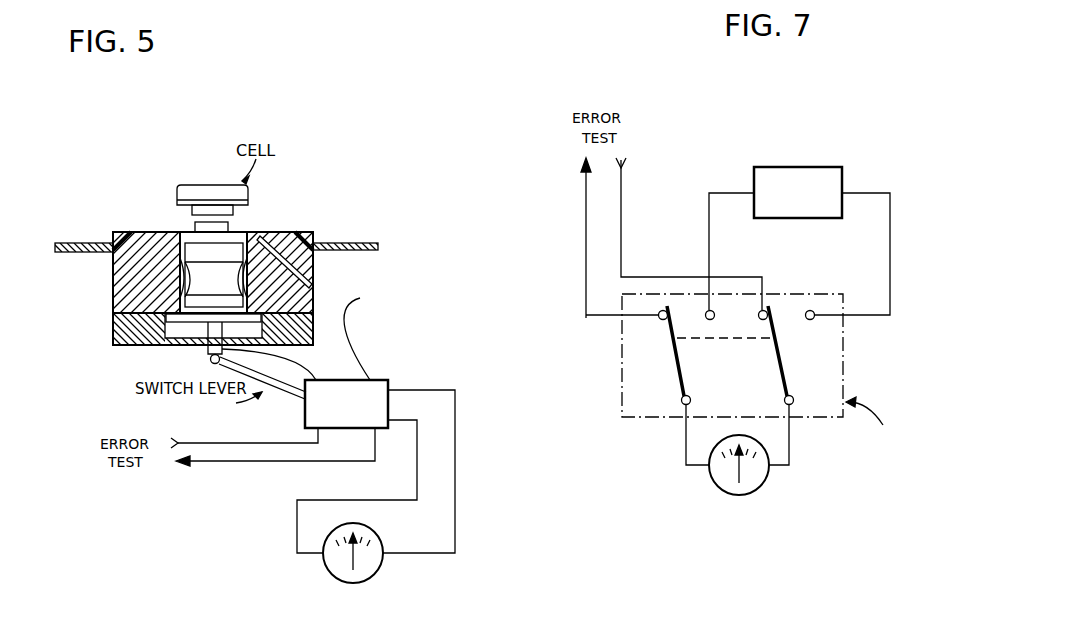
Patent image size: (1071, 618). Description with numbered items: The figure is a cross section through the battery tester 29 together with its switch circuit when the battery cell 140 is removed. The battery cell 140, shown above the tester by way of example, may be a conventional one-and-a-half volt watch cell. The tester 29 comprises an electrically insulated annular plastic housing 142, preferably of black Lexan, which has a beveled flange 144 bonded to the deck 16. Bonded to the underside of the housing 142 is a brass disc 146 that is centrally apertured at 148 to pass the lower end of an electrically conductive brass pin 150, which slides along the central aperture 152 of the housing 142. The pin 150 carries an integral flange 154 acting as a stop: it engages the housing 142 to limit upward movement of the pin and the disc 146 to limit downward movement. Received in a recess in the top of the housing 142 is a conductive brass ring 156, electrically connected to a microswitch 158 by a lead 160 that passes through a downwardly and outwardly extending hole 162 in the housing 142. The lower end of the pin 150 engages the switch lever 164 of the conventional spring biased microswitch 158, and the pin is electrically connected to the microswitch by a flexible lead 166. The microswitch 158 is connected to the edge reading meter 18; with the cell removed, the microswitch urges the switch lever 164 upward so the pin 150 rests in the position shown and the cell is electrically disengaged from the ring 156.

In FIG. 5, the deck 16 is at (72, 244).
In FIG. 5, the edge reading meter 18 is at (340, 566).
In FIG. 7, the edge reading meter 18 is at (724, 478).
In FIG. 5, the battery tester 29 is at (325, 200).
In FIG. 7, the battery tester 29 is at (816, 168).
In FIG. 5, the battery cell 140 is at (192, 190).
In FIG. 5, the annular plastic housing 142 is at (132, 294).
In FIG. 5, the beveled flange 144 is at (115, 234).
In FIG. 5, the brass disc 146 is at (126, 330).
In FIG. 5, the central aperture of disc 148 is at (205, 348).
In FIG. 5, the brass pin 150 is at (234, 250).
In FIG. 5, the central aperture of housing 152 is at (142, 272).
In FIG. 5, the integral flange 154 is at (309, 333).
In FIG. 5, the conductive ring 156 is at (170, 238).
In FIG. 5, the microswitch 158 is at (381, 389).
In FIG. 7, the microswitch 158 is at (622, 366).
In FIG. 5, the lead 160 is at (371, 331).
In FIG. 5, the hole 162 is at (315, 263).
In FIG. 5, the switch lever 164 is at (298, 394).
In FIG. 5, the flexible lead 166 is at (309, 378).